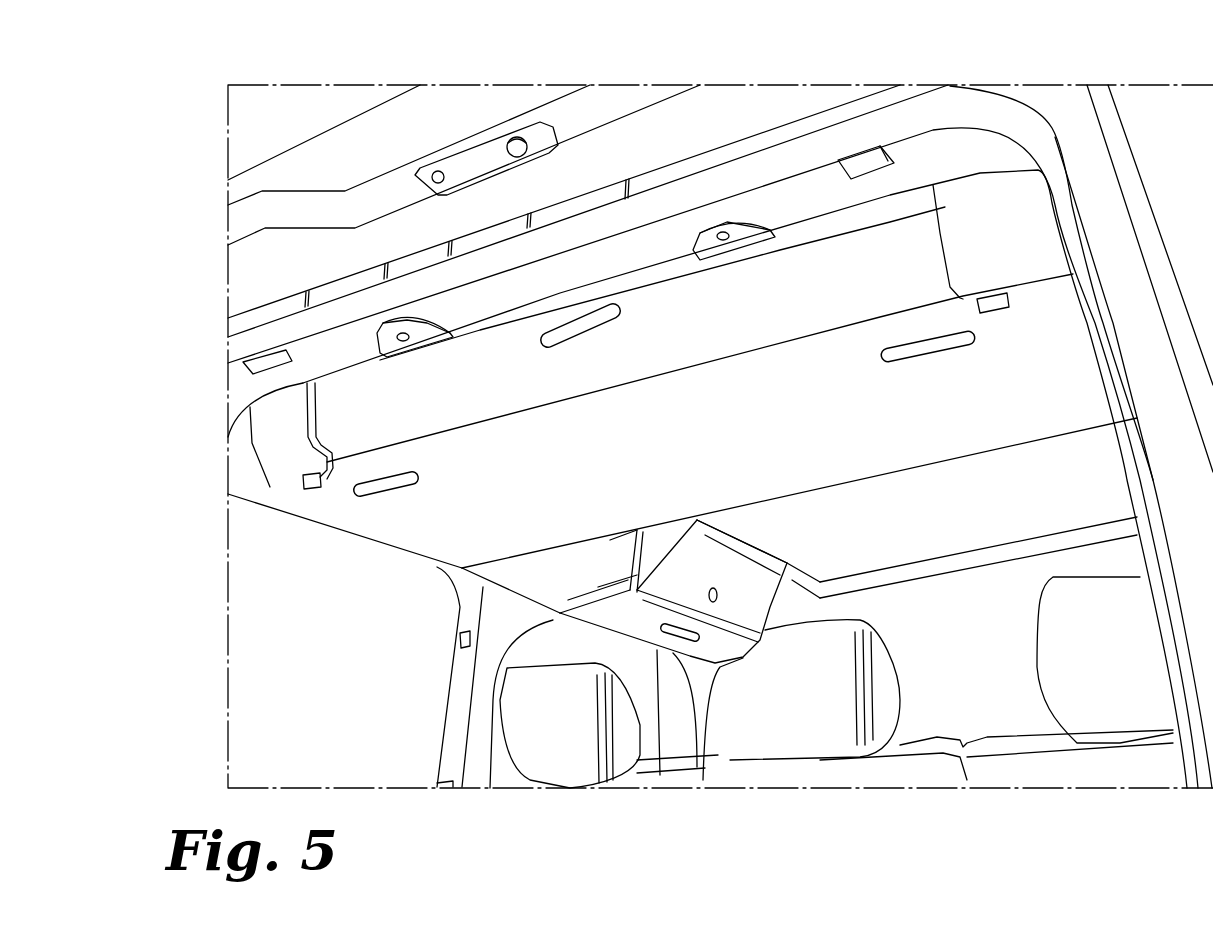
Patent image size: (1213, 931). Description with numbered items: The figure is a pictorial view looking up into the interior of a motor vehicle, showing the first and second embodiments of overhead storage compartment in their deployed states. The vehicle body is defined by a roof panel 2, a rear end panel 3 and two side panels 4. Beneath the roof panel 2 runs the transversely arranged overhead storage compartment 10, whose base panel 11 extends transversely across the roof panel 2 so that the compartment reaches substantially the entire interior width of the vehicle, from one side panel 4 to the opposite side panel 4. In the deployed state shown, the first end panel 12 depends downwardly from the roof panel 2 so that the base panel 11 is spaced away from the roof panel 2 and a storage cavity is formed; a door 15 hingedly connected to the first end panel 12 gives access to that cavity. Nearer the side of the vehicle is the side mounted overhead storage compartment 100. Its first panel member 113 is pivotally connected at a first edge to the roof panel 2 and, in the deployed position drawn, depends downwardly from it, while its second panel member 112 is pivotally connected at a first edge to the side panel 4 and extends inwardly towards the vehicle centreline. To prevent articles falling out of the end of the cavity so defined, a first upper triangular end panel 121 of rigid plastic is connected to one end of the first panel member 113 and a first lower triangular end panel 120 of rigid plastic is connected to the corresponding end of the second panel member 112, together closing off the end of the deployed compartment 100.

The roof panel 2 is at (608, 257).
The rear end panel 3 is at (343, 175).
The side panel 4 is at (468, 748).
The overhead storage compartment 10 is at (362, 537).
The base panel 11 is at (435, 540).
The first end panel 12 is at (310, 448).
The door 15 is at (508, 372).
The overhead storage compartment 100 is at (735, 632).
The second panel member 112 is at (657, 650).
The first panel member 113 is at (770, 605).
The first lower triangular end panel 120 is at (608, 545).
The first upper triangular end panel 121 is at (616, 605).